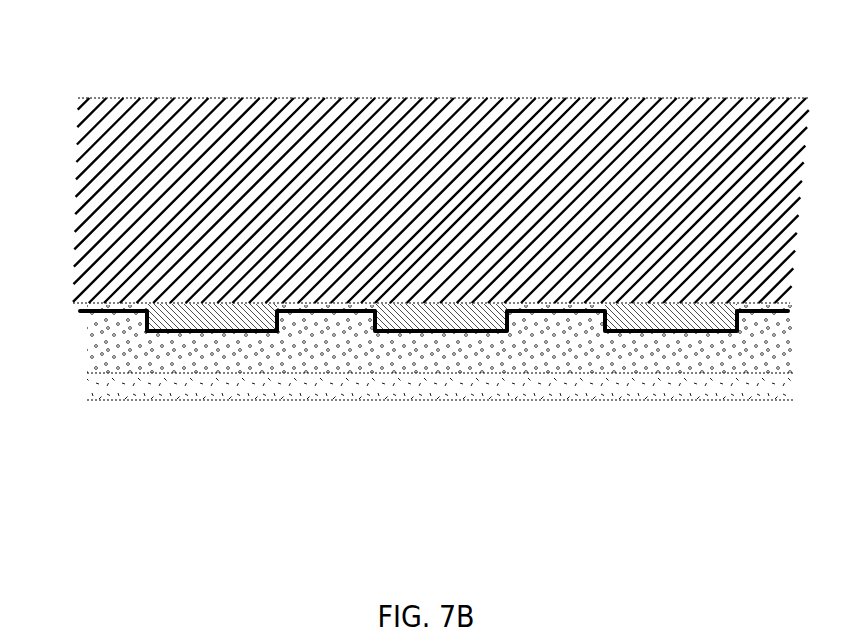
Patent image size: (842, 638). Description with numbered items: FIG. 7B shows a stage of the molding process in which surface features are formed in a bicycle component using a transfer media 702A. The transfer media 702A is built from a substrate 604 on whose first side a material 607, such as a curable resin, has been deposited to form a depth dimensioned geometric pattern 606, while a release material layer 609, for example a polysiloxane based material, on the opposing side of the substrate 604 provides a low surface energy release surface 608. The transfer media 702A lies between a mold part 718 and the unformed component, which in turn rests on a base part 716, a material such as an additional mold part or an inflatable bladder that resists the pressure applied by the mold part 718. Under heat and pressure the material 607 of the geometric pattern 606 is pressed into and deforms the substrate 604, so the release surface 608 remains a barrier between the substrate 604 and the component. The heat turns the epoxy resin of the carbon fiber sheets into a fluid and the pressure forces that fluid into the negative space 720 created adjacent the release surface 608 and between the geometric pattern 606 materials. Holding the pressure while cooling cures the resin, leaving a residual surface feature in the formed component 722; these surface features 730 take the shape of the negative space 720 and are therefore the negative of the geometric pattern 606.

The transfer media 702A is at (76, 304).
The substrate 604 is at (262, 329).
The geometric pattern 606 is at (230, 315).
The material 607 is at (230, 313).
The release surface 608 is at (278, 334).
The release material layer 609 is at (393, 335).
The base part 716 is at (435, 385).
The mold part 718 is at (555, 225).
The negative space 720 is at (375, 311).
The formed component 722 is at (657, 355).
The surface features 730 is at (578, 328).